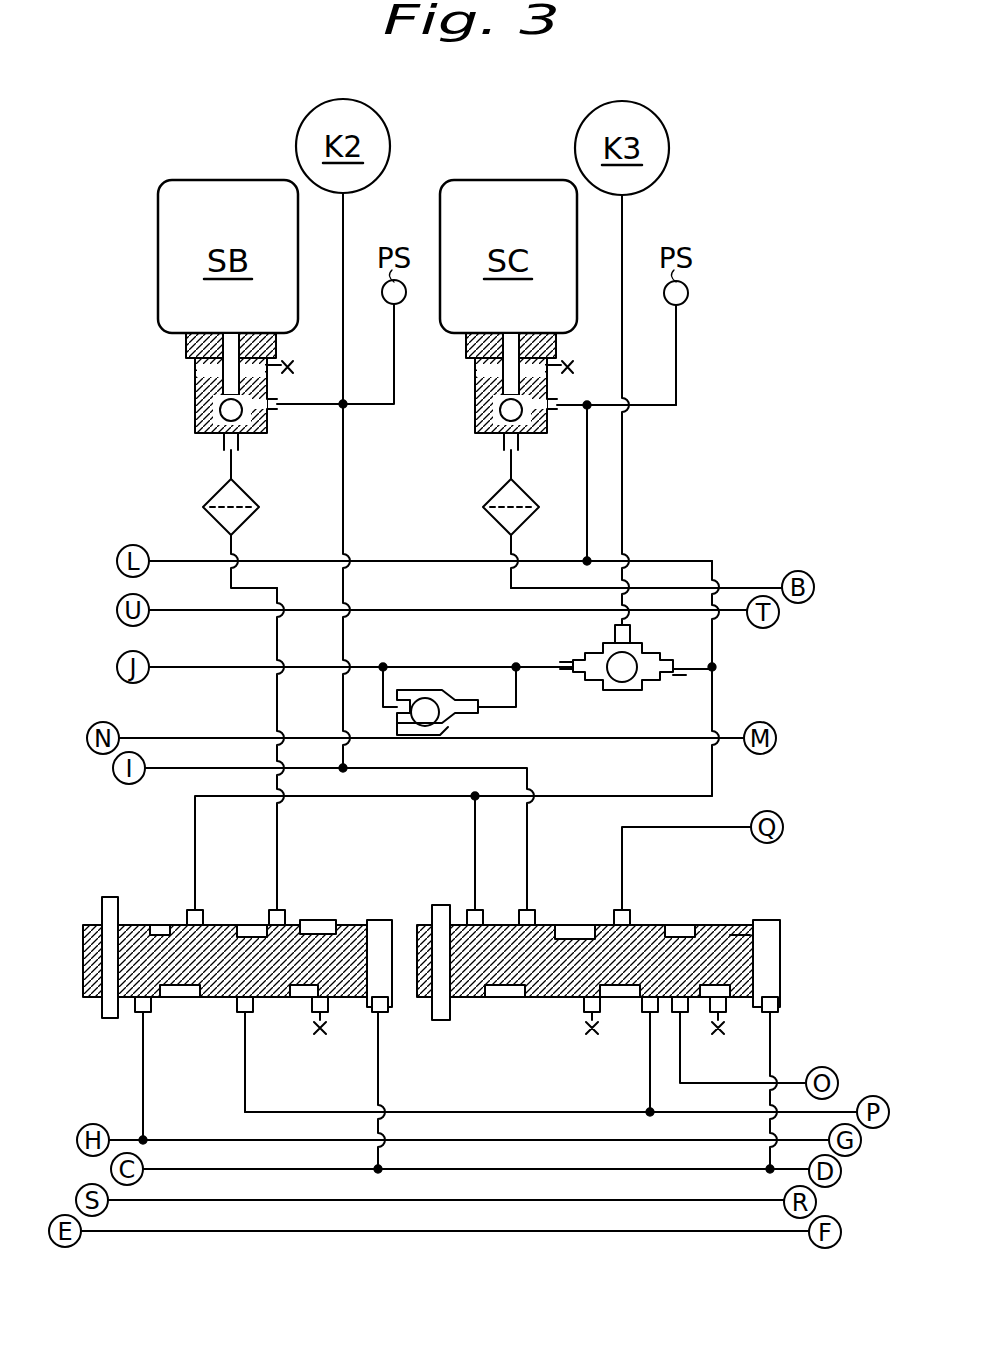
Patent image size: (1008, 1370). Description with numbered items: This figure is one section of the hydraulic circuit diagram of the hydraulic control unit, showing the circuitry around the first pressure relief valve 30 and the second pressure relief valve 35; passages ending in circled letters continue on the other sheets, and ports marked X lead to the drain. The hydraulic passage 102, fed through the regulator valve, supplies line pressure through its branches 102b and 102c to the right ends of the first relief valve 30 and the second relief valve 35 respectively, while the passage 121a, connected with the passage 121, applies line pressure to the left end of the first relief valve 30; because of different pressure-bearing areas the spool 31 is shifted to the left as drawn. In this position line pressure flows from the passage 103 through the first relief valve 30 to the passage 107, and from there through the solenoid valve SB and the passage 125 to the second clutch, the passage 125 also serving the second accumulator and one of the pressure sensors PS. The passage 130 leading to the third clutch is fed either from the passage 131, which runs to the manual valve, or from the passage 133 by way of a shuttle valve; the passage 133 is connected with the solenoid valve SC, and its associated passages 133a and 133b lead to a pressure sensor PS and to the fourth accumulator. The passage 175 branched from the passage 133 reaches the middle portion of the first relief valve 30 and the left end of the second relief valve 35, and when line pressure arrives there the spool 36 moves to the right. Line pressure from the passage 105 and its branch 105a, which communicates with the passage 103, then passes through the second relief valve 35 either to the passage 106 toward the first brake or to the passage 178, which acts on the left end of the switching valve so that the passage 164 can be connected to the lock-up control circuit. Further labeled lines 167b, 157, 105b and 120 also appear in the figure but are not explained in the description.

The hydraulic passage 125 is at (345, 217).
The hydraulic passage 130 is at (624, 222).
The hydraulic passage 133a is at (645, 417).
The hydraulic passage 133b is at (395, 560).
The hydraulic passage 103 is at (557, 586).
The hydraulic passage 133 is at (714, 575).
The line U 167b is at (382, 612).
The hydraulic passage 131 is at (548, 678).
The hydraulic passage 107 is at (275, 700).
The line N 157 is at (431, 719).
The hydraulic passage 175 is at (714, 775).
The hydraulic passage 106 is at (581, 798).
The first pressure relief valve 30 is at (325, 899).
The spool 31 is at (220, 921).
The second pressure relief valve 35 is at (686, 901).
The spool 36 is at (740, 938).
The hydraulic passage 121a is at (145, 1050).
The hydraulic passage 121 is at (182, 1138).
The line 105b is at (247, 1082).
The hydraulic passage 102b is at (380, 1082).
The hydraulic passage 105 is at (518, 1110).
The hydraulic passage 105a is at (648, 1060).
The hydraulic passage 178 is at (682, 1063).
The hydraulic passage 102c is at (772, 1040).
The hydraulic passage 102 is at (537, 1171).
The hydraulic passage 164 is at (422, 1202).
The line E 120 is at (155, 1233).